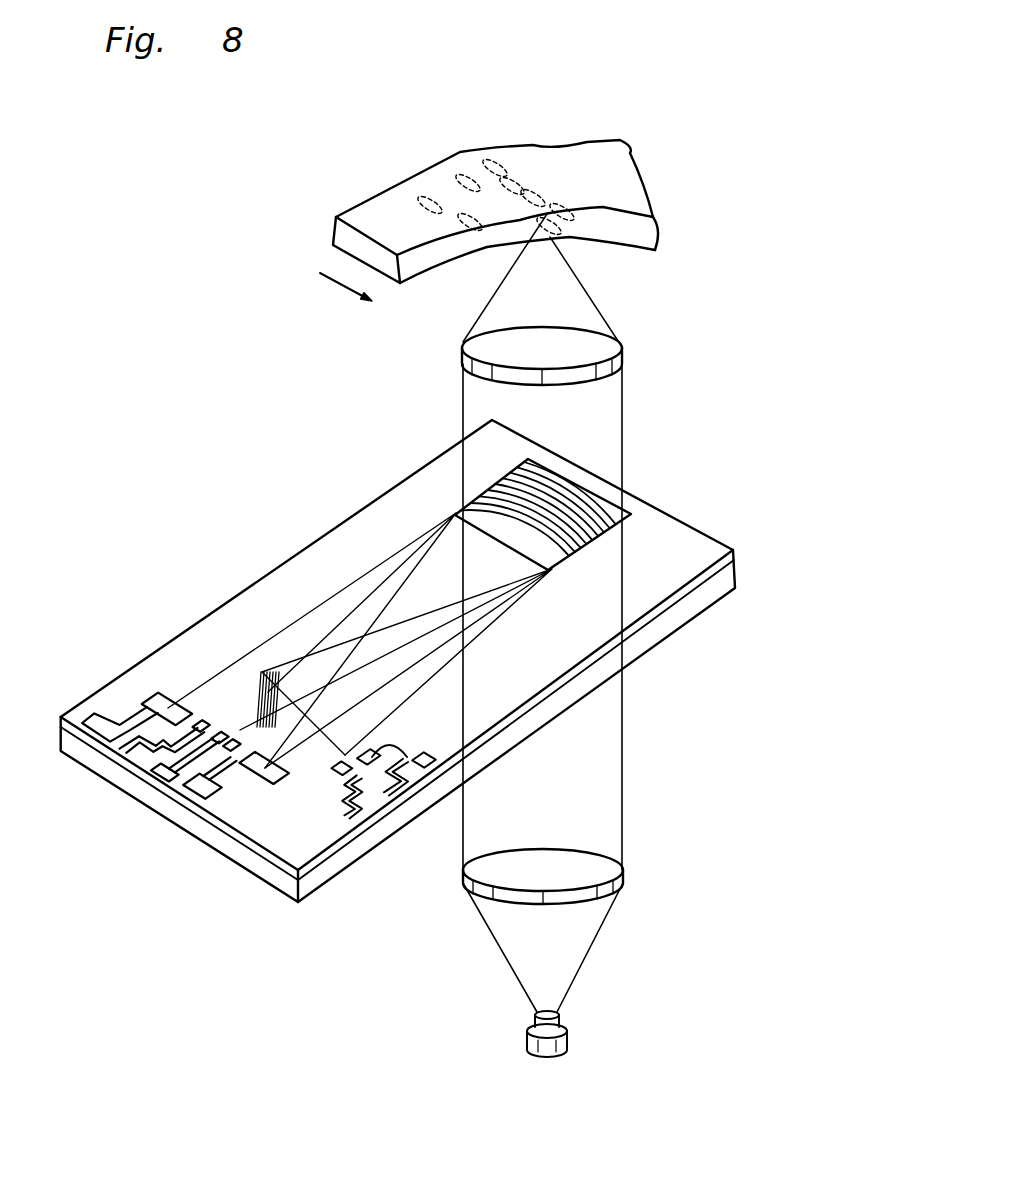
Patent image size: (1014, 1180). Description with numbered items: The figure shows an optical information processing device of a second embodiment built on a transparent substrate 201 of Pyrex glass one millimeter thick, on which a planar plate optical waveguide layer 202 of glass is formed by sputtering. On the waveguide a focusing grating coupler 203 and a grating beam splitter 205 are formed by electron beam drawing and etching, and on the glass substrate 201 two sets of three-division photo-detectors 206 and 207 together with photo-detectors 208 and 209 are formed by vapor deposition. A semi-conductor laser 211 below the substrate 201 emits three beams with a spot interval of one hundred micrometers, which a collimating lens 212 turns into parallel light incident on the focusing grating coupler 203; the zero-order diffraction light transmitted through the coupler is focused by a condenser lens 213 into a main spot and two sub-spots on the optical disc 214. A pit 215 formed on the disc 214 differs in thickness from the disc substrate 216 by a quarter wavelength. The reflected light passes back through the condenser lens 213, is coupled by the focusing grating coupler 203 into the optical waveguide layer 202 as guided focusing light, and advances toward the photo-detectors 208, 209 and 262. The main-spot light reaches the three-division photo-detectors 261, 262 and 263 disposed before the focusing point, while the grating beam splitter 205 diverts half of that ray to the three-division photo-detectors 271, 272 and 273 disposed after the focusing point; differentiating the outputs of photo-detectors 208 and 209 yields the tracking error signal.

The transparent substrate 201 is at (675, 630).
The planar plate optical waveguide layer 202 is at (705, 578).
The focusing grating coupler 203 is at (492, 490).
The grating beam splitter 205 is at (262, 692).
The three-division photo-detector 206 is at (142, 627).
The three-division photo-detector 207 is at (407, 894).
The photo-detector 208 is at (156, 703).
The photo-detector 209 is at (270, 780).
The semi-conductor laser 211 is at (568, 1038).
The collimating lens 212 is at (621, 883).
The condenser lens 213 is at (622, 362).
The optical disc 214 is at (662, 219).
The pit 215 is at (540, 224).
The substrate 216 is at (607, 218).
The three-division photo-detector 261 is at (231, 744).
The three-division photo-detector 262 is at (219, 737).
The three-division photo-detector 263 is at (207, 722).
The three-division photo-detector 271 is at (341, 775).
The three-division photo-detector 272 is at (356, 778).
The three-division photo-detector 273 is at (416, 772).